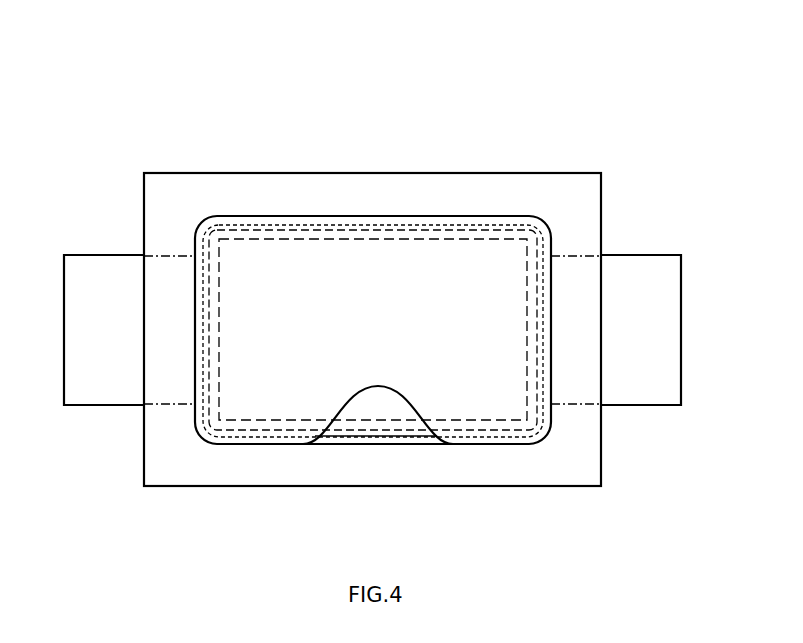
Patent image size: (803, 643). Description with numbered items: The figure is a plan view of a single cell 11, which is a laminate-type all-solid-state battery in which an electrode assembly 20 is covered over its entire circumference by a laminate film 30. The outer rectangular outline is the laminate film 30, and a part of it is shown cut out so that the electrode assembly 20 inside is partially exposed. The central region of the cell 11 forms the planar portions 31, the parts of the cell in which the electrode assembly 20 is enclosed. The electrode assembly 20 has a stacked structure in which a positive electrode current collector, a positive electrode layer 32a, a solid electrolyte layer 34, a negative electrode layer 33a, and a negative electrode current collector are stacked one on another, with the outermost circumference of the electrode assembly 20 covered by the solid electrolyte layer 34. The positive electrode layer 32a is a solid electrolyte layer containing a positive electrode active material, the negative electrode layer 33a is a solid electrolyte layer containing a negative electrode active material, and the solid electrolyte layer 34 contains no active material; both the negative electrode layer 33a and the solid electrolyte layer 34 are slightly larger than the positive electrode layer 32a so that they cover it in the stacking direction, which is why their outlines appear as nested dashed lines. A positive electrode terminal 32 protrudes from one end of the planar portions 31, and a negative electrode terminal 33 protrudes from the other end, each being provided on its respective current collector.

The cell 11 is at (210, 93).
The laminate film 30 is at (553, 190).
The planar portions 31 is at (475, 222).
The positive electrode terminal 32 is at (98, 253).
The negative electrode terminal 33 is at (633, 253).
The positive electrode layer 32a is at (402, 238).
The negative electrode layer 33a is at (307, 227).
The solid electrolyte layer 34 is at (355, 437).
The electrode assembly 20 is at (408, 436).